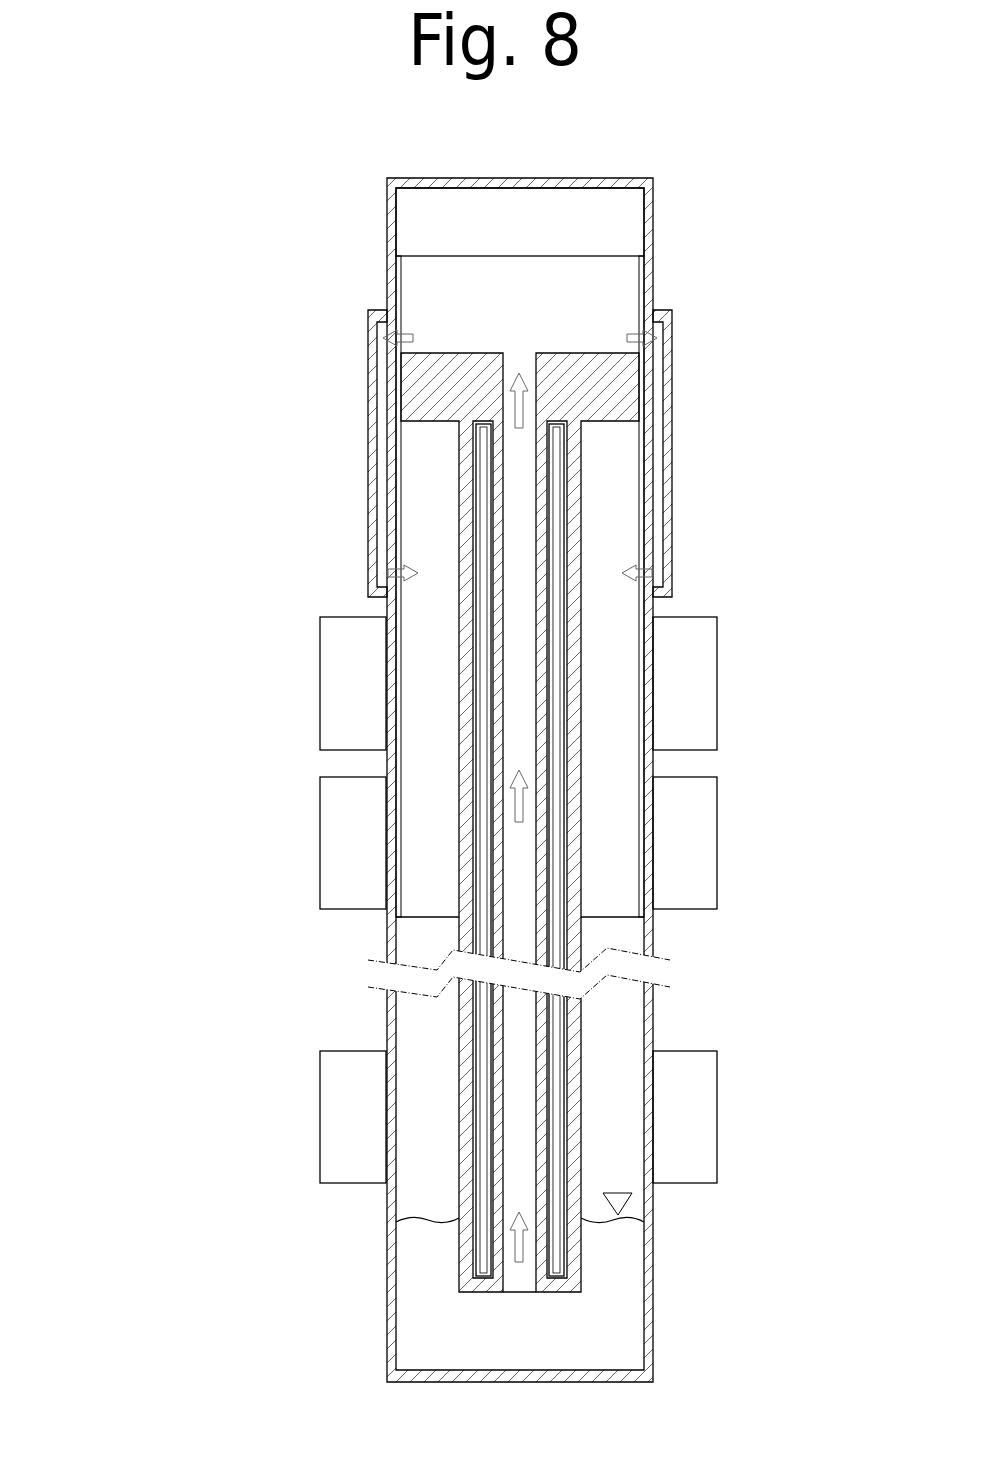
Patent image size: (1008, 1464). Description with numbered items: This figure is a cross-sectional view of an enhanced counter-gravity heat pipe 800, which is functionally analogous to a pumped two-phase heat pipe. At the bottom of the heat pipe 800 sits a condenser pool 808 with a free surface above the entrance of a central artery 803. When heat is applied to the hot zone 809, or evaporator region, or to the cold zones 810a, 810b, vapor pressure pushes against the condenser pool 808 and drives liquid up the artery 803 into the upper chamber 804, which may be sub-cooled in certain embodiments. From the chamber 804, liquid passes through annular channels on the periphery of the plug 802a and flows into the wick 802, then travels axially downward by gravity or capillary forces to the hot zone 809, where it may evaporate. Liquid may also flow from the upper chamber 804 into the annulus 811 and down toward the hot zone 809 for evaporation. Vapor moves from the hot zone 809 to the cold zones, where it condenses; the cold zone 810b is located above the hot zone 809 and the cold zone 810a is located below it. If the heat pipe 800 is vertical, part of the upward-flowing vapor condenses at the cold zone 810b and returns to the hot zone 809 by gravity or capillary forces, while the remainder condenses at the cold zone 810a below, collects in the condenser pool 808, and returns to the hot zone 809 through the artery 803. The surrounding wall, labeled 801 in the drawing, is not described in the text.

The heat pipe 800 is at (143, 130).
The housing 801 is at (392, 180).
The wick 802 is at (395, 655).
The plug 802a is at (425, 382).
The artery 803 is at (563, 687).
The upper chamber 804 is at (575, 215).
The condenser pool 808 is at (612, 1309).
The hot zone 809 is at (359, 863).
The cold zone 810a is at (346, 1119).
The cold zone 810b is at (342, 716).
The annulus 811 is at (650, 460).